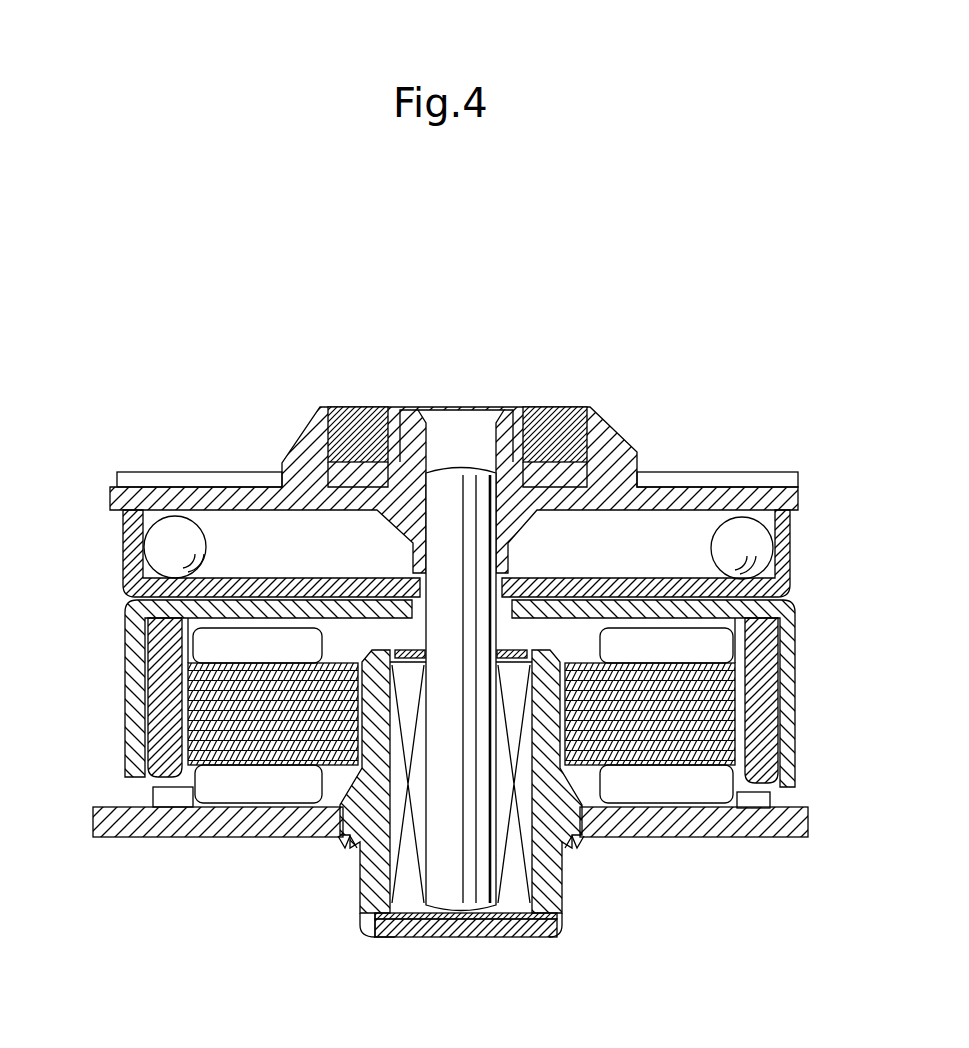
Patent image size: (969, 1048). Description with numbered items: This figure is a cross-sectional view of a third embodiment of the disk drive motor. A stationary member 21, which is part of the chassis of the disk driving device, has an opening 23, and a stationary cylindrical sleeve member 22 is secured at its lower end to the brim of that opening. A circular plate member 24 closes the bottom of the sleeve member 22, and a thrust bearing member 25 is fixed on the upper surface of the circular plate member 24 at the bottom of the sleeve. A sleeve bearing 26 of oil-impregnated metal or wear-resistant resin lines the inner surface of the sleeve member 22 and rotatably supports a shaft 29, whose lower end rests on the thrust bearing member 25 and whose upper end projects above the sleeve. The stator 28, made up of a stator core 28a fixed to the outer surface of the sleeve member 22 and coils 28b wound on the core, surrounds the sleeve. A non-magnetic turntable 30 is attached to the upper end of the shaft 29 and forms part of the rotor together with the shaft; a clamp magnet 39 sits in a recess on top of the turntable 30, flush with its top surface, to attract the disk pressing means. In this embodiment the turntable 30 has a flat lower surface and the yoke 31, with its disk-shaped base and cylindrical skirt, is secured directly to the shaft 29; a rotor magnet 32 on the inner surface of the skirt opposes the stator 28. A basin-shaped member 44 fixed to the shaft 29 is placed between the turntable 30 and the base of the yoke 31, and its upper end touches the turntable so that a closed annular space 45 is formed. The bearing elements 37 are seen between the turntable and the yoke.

The stationary member 21 is at (748, 832).
The sleeve member 22 is at (372, 862).
The opening 23 is at (575, 845).
The circular plate member 24 is at (512, 937).
The thrust bearing member 25 is at (463, 937).
The sleeve bearing 26 is at (407, 937).
The stator 28 is at (768, 632).
The stator core 28a is at (190, 702).
The coils 28b is at (140, 603).
The shaft 29 is at (463, 480).
The turntable 30 is at (612, 452).
The yoke 31 is at (780, 708).
The rotor magnet 32 is at (156, 742).
The thrust bearing 37 is at (130, 540).
The clamp magnet 39 is at (362, 412).
The basin-shaped member 44 is at (252, 580).
The closed annular space 45 is at (695, 532).